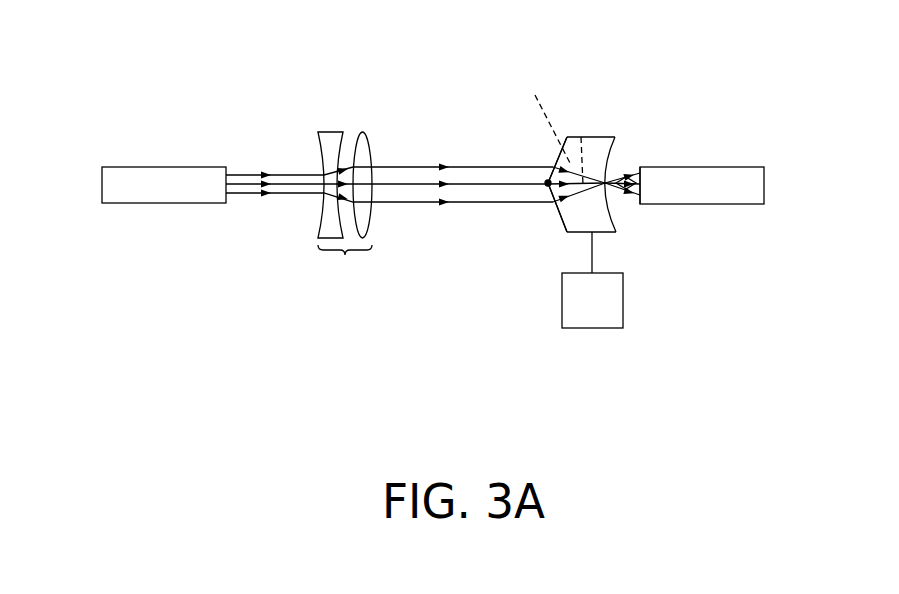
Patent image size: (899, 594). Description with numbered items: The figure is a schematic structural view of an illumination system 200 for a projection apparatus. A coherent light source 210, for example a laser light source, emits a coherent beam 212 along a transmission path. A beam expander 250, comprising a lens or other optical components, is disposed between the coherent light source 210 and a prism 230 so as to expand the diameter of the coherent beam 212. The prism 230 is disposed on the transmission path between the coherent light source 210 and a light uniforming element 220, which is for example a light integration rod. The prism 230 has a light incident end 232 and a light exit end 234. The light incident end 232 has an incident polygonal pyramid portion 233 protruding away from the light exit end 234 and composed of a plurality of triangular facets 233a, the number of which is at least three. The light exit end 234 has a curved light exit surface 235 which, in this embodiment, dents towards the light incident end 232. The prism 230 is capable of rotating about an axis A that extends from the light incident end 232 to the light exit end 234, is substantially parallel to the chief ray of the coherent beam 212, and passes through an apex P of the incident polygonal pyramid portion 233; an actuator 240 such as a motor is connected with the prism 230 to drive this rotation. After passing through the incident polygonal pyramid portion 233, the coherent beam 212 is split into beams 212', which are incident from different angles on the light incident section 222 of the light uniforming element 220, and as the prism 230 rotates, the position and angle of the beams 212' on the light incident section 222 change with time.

The illumination system 200 is at (882, 427).
The coherent light source 210 is at (165, 190).
The coherent beam 212 is at (388, 222).
The beams 212' is at (572, 112).
The beam expander 250 is at (345, 213).
The prism 230 is at (535, 192).
The light incident end 232 is at (554, 156).
The incident polygonal pyramid portion 233 is at (484, 229).
The triangular facets 233a is at (498, 275).
The apex P is at (562, 212).
The axis A is at (596, 147).
The light exit end 234 is at (610, 160).
The curved light exit surface 235 is at (622, 162).
The light uniforming element 220 is at (695, 223).
The light incident section 222 is at (635, 200).
The actuator 240 is at (595, 313).